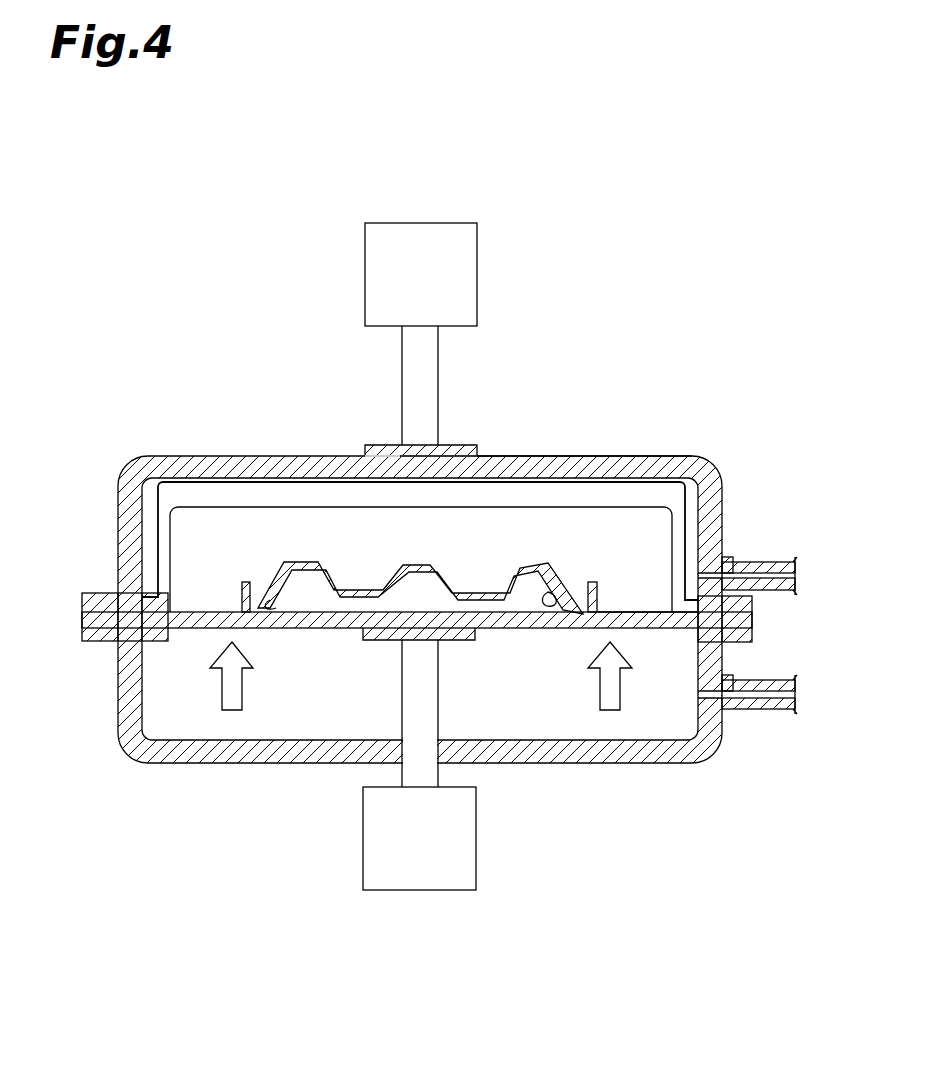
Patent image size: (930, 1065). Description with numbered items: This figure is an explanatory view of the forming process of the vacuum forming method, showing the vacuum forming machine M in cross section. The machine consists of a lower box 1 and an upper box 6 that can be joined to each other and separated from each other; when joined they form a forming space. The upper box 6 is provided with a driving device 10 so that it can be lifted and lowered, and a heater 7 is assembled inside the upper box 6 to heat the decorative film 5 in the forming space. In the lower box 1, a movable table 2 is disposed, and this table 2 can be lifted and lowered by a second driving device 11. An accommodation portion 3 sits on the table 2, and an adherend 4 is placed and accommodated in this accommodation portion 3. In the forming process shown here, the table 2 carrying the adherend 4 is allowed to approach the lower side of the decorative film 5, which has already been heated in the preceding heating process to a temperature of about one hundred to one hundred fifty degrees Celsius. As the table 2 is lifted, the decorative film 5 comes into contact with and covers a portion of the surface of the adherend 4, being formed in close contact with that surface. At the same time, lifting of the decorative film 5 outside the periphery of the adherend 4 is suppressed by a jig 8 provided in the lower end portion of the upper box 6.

The vacuum forming machine M is at (702, 283).
The lower box 1 is at (233, 763).
The table 2 is at (312, 629).
The accommodation portion 3 is at (487, 612).
The adherend 4 is at (545, 606).
The decorative film 5 is at (628, 611).
The upper box 6 is at (555, 456).
The heater 7 is at (210, 508).
The jig 8 is at (240, 590).
The driving device 10 is at (478, 243).
The driving device 11 is at (476, 865).